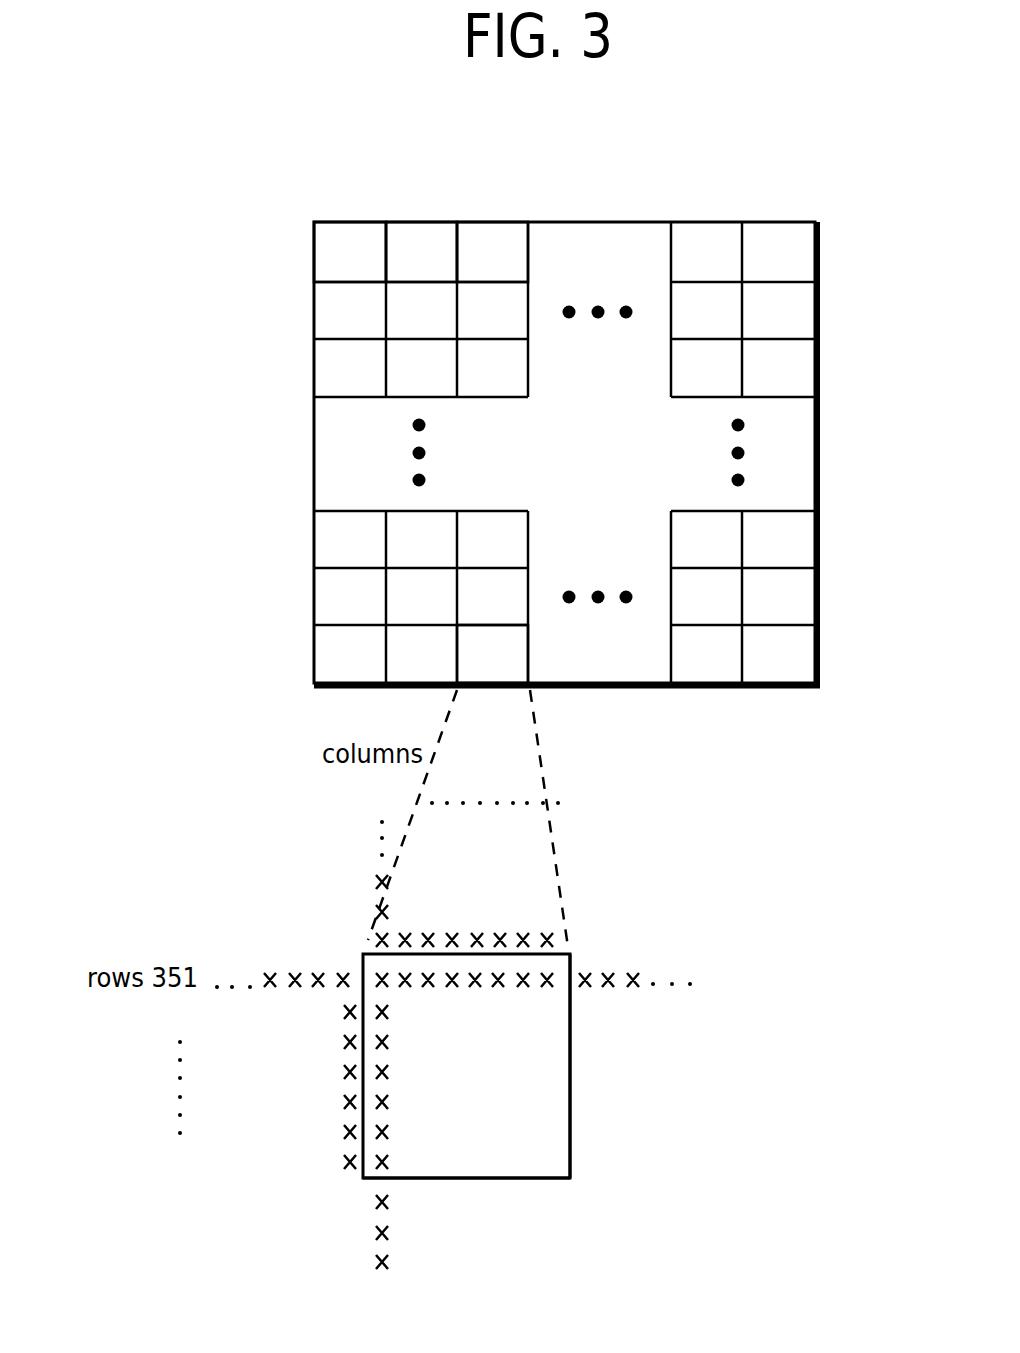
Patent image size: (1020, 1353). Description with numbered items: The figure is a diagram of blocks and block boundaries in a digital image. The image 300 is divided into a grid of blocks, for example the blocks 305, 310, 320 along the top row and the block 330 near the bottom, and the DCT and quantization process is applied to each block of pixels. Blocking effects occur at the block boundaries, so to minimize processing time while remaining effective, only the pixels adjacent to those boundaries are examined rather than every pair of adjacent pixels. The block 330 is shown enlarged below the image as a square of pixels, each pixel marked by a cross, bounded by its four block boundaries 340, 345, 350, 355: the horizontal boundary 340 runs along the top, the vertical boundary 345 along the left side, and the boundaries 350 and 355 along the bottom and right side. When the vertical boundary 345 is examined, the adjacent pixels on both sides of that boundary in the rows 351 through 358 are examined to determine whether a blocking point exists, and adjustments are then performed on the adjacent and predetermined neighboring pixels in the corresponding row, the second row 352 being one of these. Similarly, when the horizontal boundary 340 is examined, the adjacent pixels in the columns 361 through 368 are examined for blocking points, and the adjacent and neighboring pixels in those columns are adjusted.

The image 300 is at (621, 222).
The block 305 is at (372, 272).
The block 310 is at (443, 272).
The block 320 is at (515, 272).
The block 330 is at (517, 670).
The horizontal boundary 340 is at (471, 950).
The vertical boundary 345 is at (363, 1088).
The block boundary 350 is at (466, 1184).
The block boundary 355 is at (571, 1085).
The row 351 is at (421, 978).
The row 352 is at (271, 1013).
The row 358 is at (274, 1163).
The column 361 is at (375, 849).
The column 368 is at (523, 794).